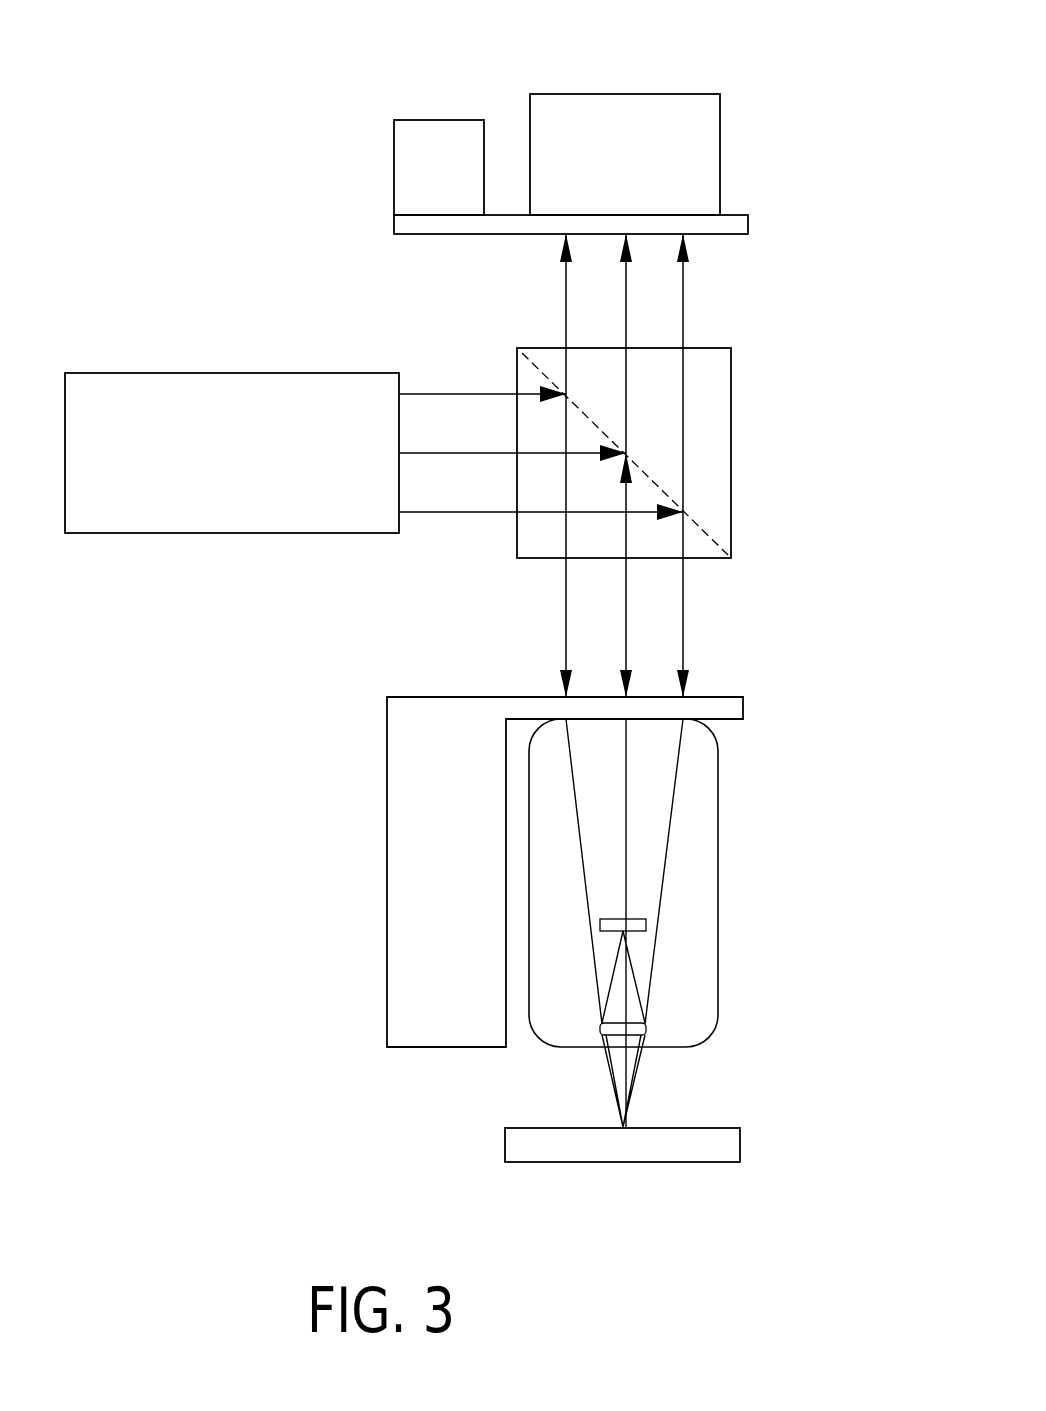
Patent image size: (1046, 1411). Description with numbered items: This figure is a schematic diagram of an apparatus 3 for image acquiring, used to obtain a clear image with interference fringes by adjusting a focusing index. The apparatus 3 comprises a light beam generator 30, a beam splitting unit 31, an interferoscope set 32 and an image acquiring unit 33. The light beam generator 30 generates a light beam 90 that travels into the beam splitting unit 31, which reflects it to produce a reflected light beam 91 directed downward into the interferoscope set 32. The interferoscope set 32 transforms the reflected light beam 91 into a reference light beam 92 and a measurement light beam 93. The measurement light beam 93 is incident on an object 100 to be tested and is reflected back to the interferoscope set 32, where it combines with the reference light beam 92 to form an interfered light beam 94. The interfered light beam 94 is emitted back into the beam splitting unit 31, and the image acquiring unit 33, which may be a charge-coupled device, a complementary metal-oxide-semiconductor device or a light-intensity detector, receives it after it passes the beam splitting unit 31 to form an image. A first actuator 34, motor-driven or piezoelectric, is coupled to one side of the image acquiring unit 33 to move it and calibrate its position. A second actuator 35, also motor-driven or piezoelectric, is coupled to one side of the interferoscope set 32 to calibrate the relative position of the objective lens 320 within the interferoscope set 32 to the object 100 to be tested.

The apparatus for image acquiring 3 is at (217, 130).
The light beam generator 30 is at (224, 505).
The beam splitting unit 31 is at (729, 427).
The interferoscope set 32 is at (718, 940).
The objective lens 320 is at (600, 1036).
The image acquiring unit 33 is at (692, 138).
The first actuator 34 is at (417, 178).
The second actuator 35 is at (407, 868).
The light beam 90 is at (460, 512).
The reflected light beam 91 is at (567, 637).
The reference light beam 92 is at (635, 987).
The measurement light beam 93 is at (633, 1088).
The interfered light beam 94 is at (685, 297).
The object to be tested 100 is at (518, 1148).